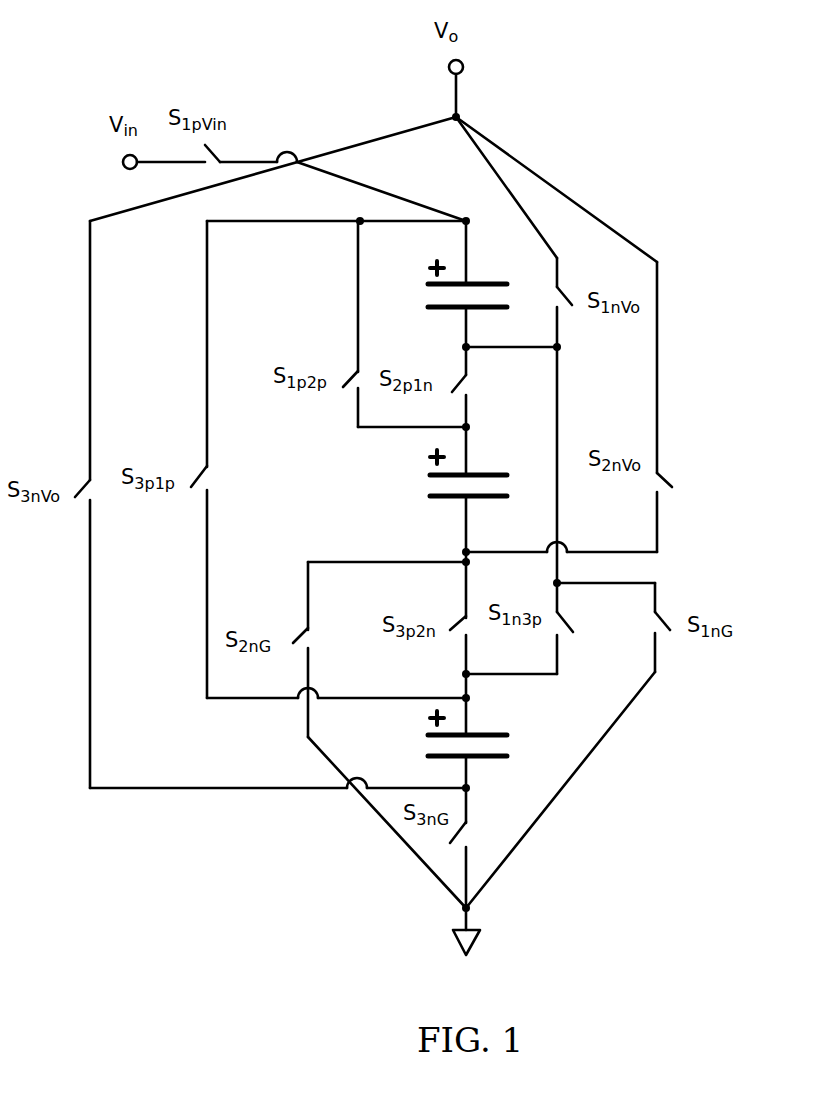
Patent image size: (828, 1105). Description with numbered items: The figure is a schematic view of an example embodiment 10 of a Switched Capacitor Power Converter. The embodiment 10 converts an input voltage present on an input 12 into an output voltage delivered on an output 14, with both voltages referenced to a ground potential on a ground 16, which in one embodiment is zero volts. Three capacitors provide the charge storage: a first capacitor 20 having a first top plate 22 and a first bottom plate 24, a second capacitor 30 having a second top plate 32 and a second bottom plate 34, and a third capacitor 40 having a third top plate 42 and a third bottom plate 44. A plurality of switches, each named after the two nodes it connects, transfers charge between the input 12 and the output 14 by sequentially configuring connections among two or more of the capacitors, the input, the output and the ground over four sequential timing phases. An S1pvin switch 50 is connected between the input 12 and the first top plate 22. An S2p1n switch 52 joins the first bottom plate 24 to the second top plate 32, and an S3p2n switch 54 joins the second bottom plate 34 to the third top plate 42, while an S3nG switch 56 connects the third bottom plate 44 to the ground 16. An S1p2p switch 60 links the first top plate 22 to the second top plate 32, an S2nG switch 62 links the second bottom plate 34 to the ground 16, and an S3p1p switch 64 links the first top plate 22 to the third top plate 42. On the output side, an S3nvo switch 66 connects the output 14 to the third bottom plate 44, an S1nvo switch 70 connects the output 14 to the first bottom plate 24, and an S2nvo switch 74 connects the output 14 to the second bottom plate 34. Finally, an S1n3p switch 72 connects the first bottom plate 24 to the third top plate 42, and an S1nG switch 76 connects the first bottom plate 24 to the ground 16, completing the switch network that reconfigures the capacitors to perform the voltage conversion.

The embodiment 10 is at (625, 125).
The input 12 is at (133, 169).
The output 14 is at (449, 67).
The ground 16 is at (476, 943).
The first capacitor 20 is at (447, 292).
The first top plate 22 is at (477, 283).
The first bottom plate 24 is at (475, 310).
The second capacitor 30 is at (447, 482).
The second top plate 32 is at (477, 474).
The second bottom plate 34 is at (475, 499).
The third capacitor 40 is at (447, 742).
The third top plate 42 is at (477, 734).
The third bottom plate 44 is at (475, 759).
The S1pvin switch 50 is at (212, 166).
The S2p1n switch 52 is at (463, 389).
The S3p2n switch 54 is at (465, 628).
The S3nG switch 56 is at (463, 840).
The S1p2p switch 60 is at (362, 384).
The S2nG switch 62 is at (307, 639).
The S3p1p switch 64 is at (209, 485).
The S3nvo switch 66 is at (92, 498).
The S1nvo switch 70 is at (556, 302).
The S1n3p switch 72 is at (555, 635).
The S2nvo switch 74 is at (655, 487).
The S1nG switch 76 is at (655, 630).